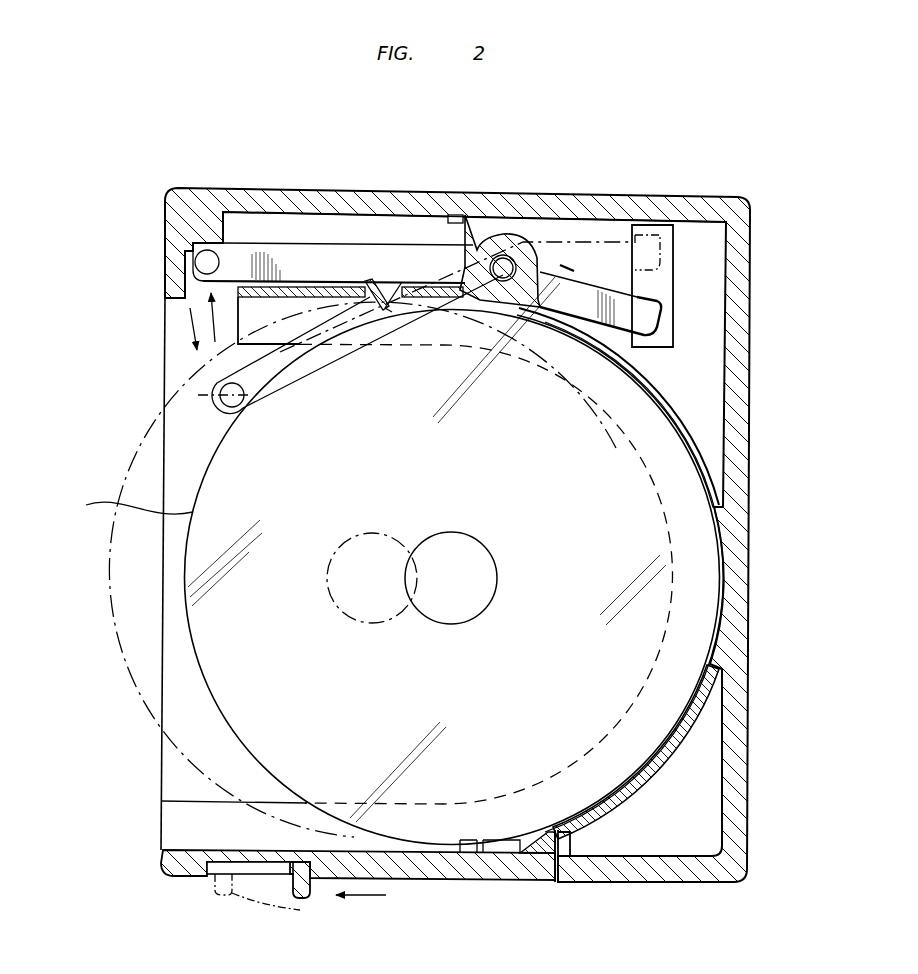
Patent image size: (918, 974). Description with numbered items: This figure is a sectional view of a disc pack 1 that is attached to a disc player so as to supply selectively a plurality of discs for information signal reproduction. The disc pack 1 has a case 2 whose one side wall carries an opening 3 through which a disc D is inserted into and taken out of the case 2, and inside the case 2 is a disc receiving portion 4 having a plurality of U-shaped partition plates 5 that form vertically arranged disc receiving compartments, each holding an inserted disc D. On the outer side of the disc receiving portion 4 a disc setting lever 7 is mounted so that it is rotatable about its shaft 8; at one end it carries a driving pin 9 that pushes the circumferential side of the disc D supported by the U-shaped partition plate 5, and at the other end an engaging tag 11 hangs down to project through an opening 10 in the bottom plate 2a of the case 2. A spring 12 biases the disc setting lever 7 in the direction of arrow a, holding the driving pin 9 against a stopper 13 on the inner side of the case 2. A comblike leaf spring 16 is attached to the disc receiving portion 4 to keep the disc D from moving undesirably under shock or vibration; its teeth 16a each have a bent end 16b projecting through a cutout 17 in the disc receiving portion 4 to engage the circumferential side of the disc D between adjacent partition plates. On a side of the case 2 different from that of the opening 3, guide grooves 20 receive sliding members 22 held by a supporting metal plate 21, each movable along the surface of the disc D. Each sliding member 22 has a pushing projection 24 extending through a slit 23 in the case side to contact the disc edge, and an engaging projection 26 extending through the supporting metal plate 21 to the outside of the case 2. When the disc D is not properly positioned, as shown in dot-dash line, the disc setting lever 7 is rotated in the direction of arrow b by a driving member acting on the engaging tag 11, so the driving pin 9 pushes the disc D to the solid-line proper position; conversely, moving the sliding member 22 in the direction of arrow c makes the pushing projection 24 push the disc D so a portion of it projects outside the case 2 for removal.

The disc pack 1 is at (633, 162).
The case 2 is at (748, 332).
The bottom plate 2a is at (713, 243).
The opening 3 is at (163, 370).
The disc receiving portion 4 is at (698, 416).
The U-shaped partition plate 5 is at (270, 803).
The disc setting lever 7 is at (300, 252).
The shaft 8 is at (506, 262).
The driving pin 9 is at (195, 264).
The opening 10 is at (670, 272).
The engaging tag 11 is at (655, 301).
The spring 12 is at (470, 250).
The stopper 13 is at (197, 203).
The comblike leaf spring 16 is at (398, 284).
The teeth 16a is at (420, 289).
The bent end 16b is at (368, 282).
The cutout 17 is at (390, 312).
The guide groove 20 is at (232, 860).
The supporting metal plate 21 is at (295, 872).
The sliding member 22 is at (419, 882).
The slit 23 is at (503, 858).
The pushing projection 24 is at (508, 840).
The engaging projection 26 is at (300, 910).